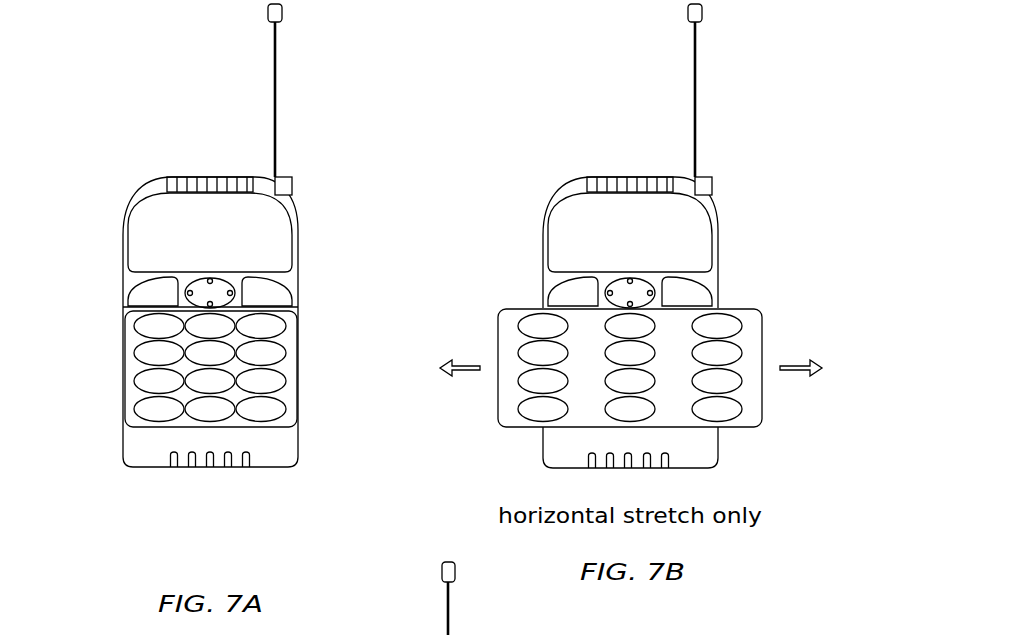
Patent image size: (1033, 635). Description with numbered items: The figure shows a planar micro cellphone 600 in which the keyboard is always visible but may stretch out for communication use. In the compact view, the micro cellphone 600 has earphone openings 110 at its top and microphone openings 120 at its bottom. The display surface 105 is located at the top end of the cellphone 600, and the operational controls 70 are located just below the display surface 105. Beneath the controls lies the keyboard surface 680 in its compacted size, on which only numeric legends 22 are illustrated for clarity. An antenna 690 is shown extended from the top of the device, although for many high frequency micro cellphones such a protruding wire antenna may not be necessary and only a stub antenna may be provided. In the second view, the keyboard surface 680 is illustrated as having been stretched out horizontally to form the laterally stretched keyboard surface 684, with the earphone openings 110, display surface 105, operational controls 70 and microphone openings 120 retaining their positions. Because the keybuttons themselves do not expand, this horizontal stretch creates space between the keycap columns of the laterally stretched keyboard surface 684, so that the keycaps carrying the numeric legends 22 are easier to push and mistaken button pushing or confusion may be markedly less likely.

In FIG. 7A, the earphone openings 110 is at (147, 178).
In FIG. 7A, the display surface 105 is at (255, 230).
In FIG. 7A, the antenna 690 is at (278, 87).
In FIG. 7B, the antenna 690 is at (698, 87).
In FIG. 7A, the operational controls 70 is at (315, 272).
In FIG. 7A, the numeric legends 22 is at (315, 313).
In FIG. 7A, the keyboard surface 680 is at (120, 322).
In FIG. 7A, the microphone openings 120 is at (172, 467).
In FIG. 7A, the micro cellphone 600 is at (200, 287).
In FIG. 7B, the laterally stretched keyboard surface 684 is at (763, 430).